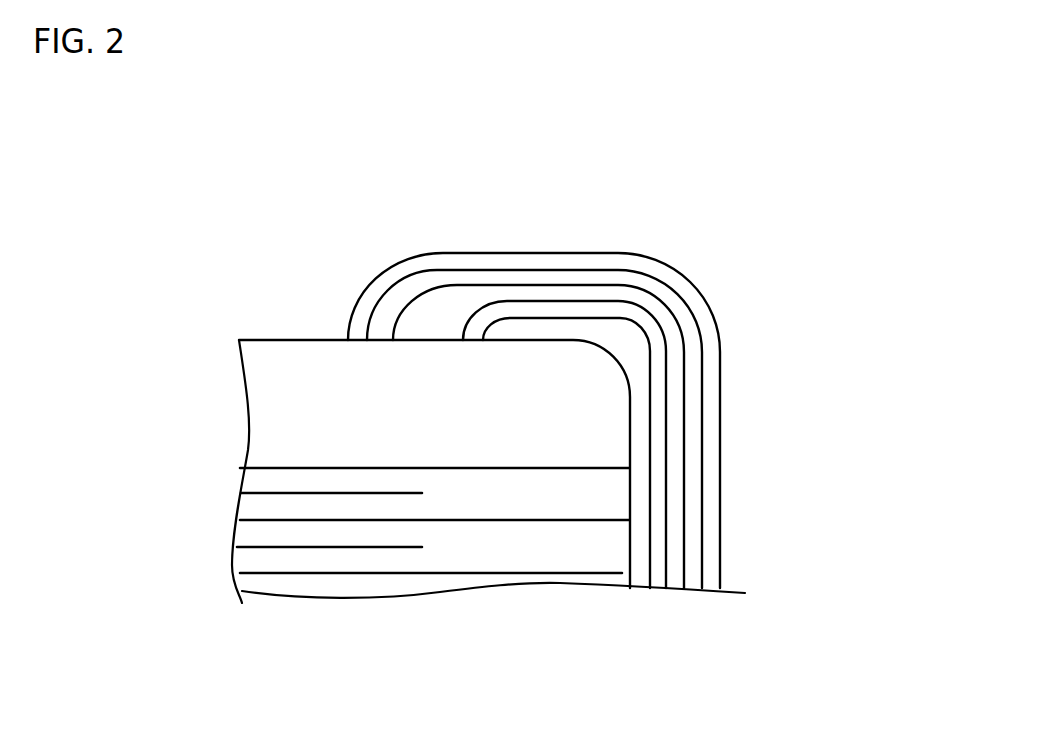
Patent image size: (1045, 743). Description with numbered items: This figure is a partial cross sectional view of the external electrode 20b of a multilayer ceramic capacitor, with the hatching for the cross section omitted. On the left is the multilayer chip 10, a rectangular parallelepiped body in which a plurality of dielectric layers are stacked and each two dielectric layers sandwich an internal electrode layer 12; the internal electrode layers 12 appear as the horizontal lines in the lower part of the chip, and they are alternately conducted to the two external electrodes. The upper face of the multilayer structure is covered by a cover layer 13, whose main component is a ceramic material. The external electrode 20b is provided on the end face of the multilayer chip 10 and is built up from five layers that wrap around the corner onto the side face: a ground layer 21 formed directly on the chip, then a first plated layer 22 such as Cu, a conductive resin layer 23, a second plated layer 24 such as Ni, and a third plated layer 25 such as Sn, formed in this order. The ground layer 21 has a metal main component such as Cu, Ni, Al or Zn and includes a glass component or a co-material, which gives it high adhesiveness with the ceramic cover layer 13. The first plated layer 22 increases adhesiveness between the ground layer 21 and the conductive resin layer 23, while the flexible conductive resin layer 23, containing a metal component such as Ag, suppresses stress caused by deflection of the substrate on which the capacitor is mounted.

The multilayer chip 10 is at (455, 439).
The internal electrode layer 12 is at (480, 585).
The cover layer 13 is at (318, 380).
The external electrode 20b is at (646, 400).
The ground layer 21 is at (640, 490).
The first plated layer 22 is at (657, 427).
The conductive resin layer 23 is at (677, 372).
The second plated layer 24 is at (683, 325).
The third plated layer 25 is at (565, 402).